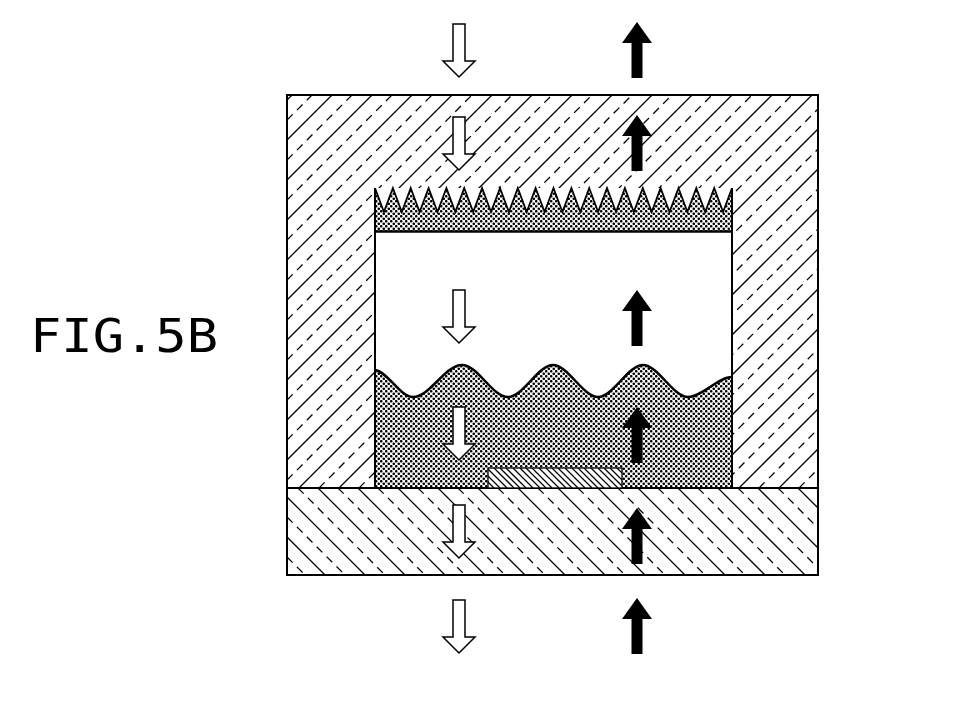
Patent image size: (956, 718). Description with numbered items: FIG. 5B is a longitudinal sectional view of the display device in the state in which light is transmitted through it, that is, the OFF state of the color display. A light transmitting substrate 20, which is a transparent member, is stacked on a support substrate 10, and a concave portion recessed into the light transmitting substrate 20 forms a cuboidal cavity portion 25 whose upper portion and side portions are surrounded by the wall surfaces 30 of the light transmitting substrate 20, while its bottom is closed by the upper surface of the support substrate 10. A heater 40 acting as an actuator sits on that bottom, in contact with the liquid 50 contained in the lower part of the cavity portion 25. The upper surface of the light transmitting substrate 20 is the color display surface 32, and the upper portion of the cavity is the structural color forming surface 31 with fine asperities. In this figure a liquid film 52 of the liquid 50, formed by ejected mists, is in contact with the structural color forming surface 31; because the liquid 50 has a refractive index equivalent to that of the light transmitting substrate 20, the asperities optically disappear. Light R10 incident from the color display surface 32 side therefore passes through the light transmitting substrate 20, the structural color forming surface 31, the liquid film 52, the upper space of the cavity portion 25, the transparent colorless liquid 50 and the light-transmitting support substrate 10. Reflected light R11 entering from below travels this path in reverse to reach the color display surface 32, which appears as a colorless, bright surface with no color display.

The support substrate 10 is at (820, 530).
The light transmitting substrate 20 is at (820, 167).
The cavity portion 25 is at (710, 358).
The wall surfaces 30 is at (732, 330).
The structural color forming surface 31 is at (700, 232).
The color display surface 32 is at (743, 95).
The heater 40 is at (557, 490).
The liquid 50 is at (732, 447).
The liquid film 52 is at (733, 220).
The light R10 is at (456, 121).
The reflected light R11 is at (651, 117).